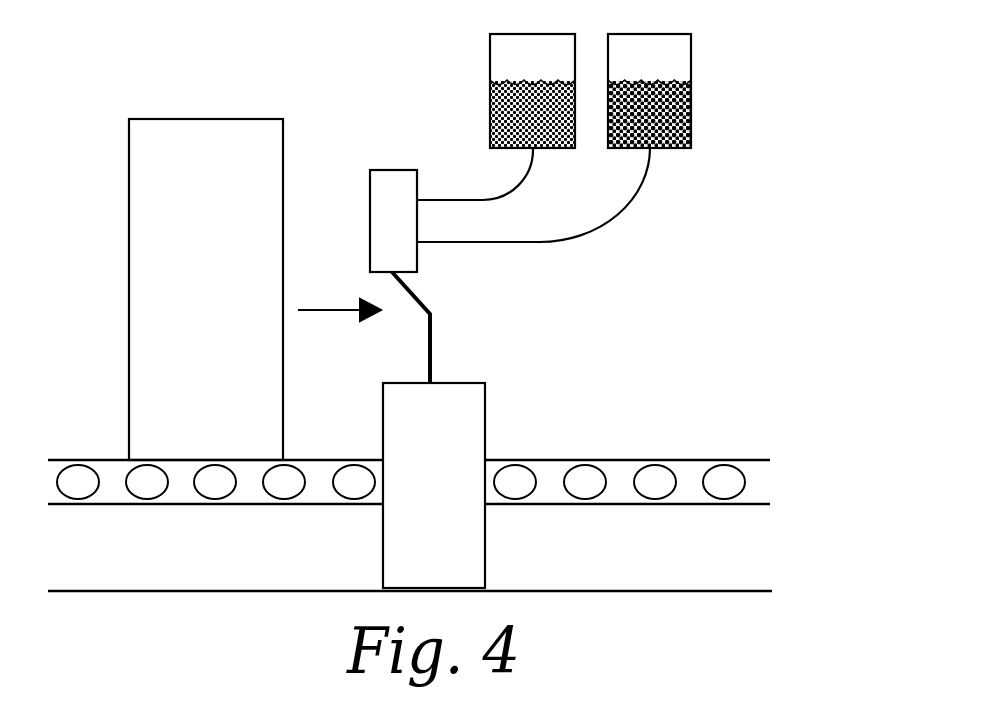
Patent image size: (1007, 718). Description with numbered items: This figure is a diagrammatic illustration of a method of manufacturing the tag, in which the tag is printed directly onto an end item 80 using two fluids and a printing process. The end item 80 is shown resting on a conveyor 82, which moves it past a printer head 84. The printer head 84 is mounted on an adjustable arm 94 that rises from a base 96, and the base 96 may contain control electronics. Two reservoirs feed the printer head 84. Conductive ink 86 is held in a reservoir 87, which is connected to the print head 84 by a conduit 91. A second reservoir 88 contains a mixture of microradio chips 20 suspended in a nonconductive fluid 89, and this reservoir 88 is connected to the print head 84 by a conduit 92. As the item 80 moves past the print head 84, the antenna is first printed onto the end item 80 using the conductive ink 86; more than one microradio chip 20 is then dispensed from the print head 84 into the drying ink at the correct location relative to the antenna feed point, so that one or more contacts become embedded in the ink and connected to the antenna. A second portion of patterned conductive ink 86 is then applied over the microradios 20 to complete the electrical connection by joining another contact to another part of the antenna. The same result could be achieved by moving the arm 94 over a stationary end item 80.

The end item 80 is at (221, 264).
The conveyor 82 is at (108, 460).
The printer head 84 is at (408, 233).
The conductive ink 86 is at (522, 118).
The reservoir 87 is at (490, 57).
The reservoir 88 is at (691, 60).
The nonconductive fluid 89 is at (673, 98).
The microradio chips 20 is at (688, 120).
The conduit 91 is at (512, 180).
The conduit 92 is at (613, 219).
The adjustable arm 94 is at (432, 323).
The base 96 is at (446, 492).